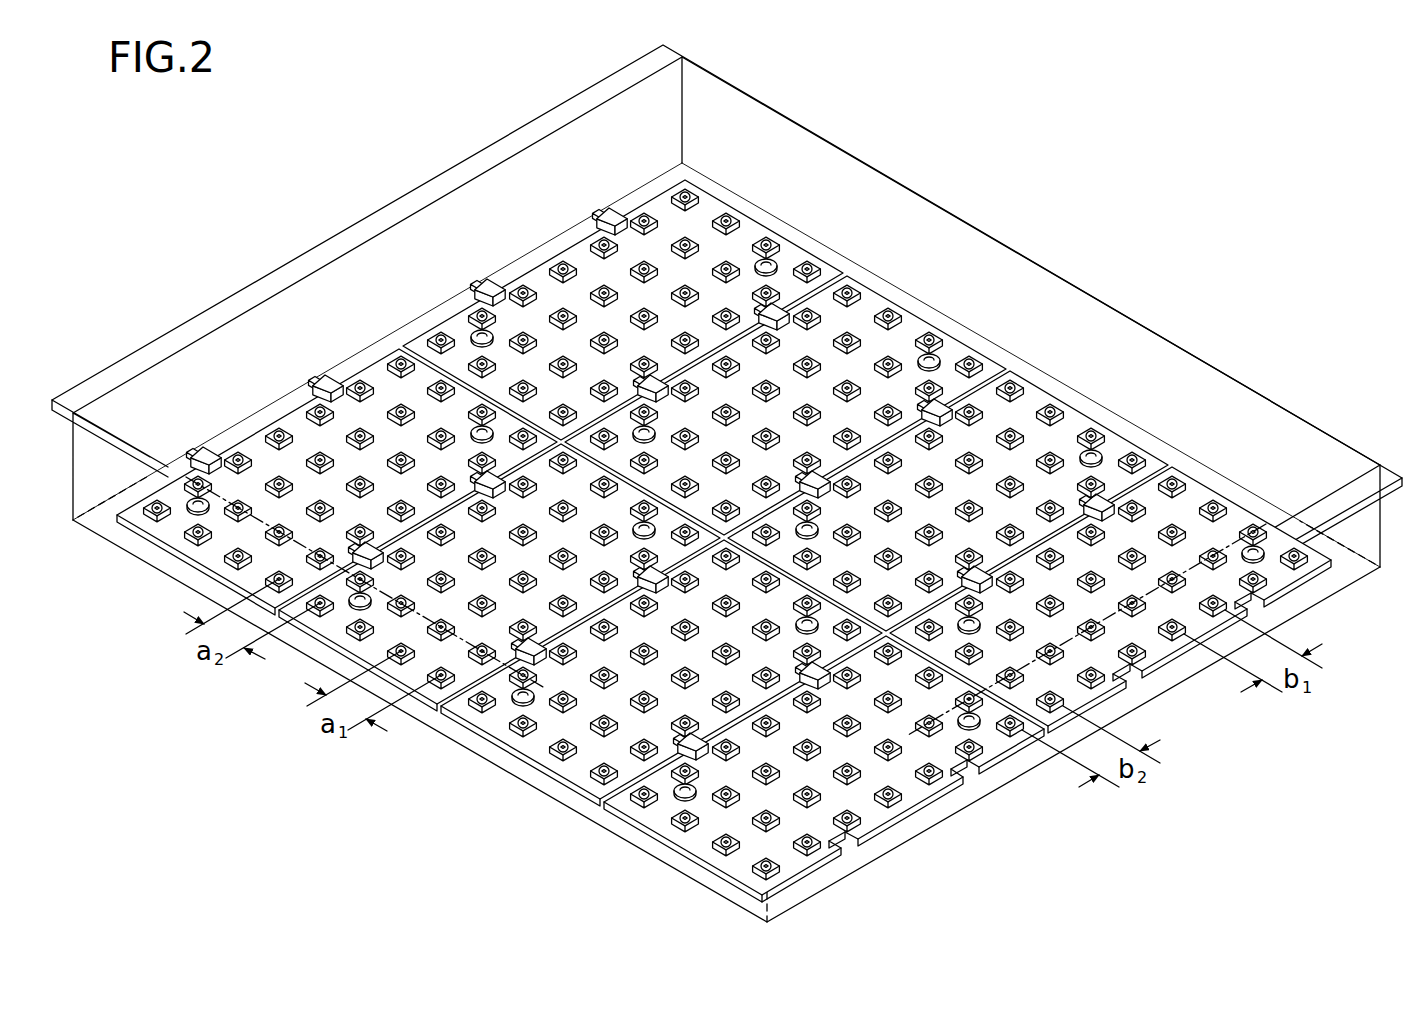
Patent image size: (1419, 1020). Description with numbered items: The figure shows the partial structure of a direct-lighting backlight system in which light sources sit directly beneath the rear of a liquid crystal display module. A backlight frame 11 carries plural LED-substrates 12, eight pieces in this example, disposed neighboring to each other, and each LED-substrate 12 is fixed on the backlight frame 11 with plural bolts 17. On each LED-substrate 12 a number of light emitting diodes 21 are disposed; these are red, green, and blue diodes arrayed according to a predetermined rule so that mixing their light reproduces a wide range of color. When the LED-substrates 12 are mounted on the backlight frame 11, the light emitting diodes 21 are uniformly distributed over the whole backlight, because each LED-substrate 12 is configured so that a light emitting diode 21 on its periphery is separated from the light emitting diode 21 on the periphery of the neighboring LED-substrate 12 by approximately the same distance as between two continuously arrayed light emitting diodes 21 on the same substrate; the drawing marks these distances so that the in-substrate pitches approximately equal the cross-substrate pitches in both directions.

The backlight frame 11 is at (1205, 363).
The LED-substrate 12 is at (768, 222).
The bolt 17 is at (933, 362).
The light emitting diode (LED) 21 is at (693, 238).